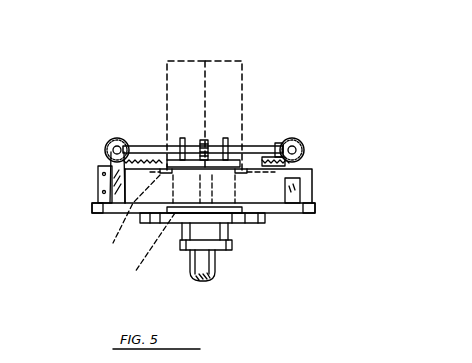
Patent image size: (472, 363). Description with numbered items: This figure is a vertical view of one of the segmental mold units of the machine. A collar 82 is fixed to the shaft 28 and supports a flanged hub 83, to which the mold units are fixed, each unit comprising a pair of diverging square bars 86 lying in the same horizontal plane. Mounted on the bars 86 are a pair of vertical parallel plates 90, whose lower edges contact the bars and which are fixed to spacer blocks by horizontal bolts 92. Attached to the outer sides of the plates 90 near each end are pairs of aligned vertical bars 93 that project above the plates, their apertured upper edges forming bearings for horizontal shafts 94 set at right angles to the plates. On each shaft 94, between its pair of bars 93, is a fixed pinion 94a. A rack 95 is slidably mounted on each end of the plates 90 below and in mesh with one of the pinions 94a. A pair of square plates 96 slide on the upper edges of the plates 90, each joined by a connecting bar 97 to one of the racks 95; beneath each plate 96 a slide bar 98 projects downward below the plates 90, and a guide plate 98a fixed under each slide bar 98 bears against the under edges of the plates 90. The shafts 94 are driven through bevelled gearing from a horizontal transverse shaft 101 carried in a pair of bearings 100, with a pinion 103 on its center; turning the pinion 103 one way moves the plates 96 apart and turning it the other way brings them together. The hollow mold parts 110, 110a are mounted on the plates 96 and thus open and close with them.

The shaft 28 is at (216, 271).
The collar 82 is at (232, 246).
The flanged hub 83 is at (268, 226).
The square bars 86 is at (92, 209).
The vertical parallel plates 90 is at (318, 188).
The horizontal bolts 92 is at (312, 197).
The vertical bars 93 is at (114, 213).
The horizontal shafts 94 is at (304, 150).
The pinion 94a is at (105, 150).
The rack 95 is at (297, 162).
The square plates 96 is at (256, 152).
The connecting bar 97 is at (134, 220).
The slide bar 98 is at (155, 254).
The guide plate 98a is at (188, 213).
The bearings 100 is at (232, 150).
The transverse shaft 101 is at (138, 140).
The pinion 103 is at (203, 140).
The hollow mold part 110 is at (168, 61).
The hollow mold part 110a is at (242, 61).